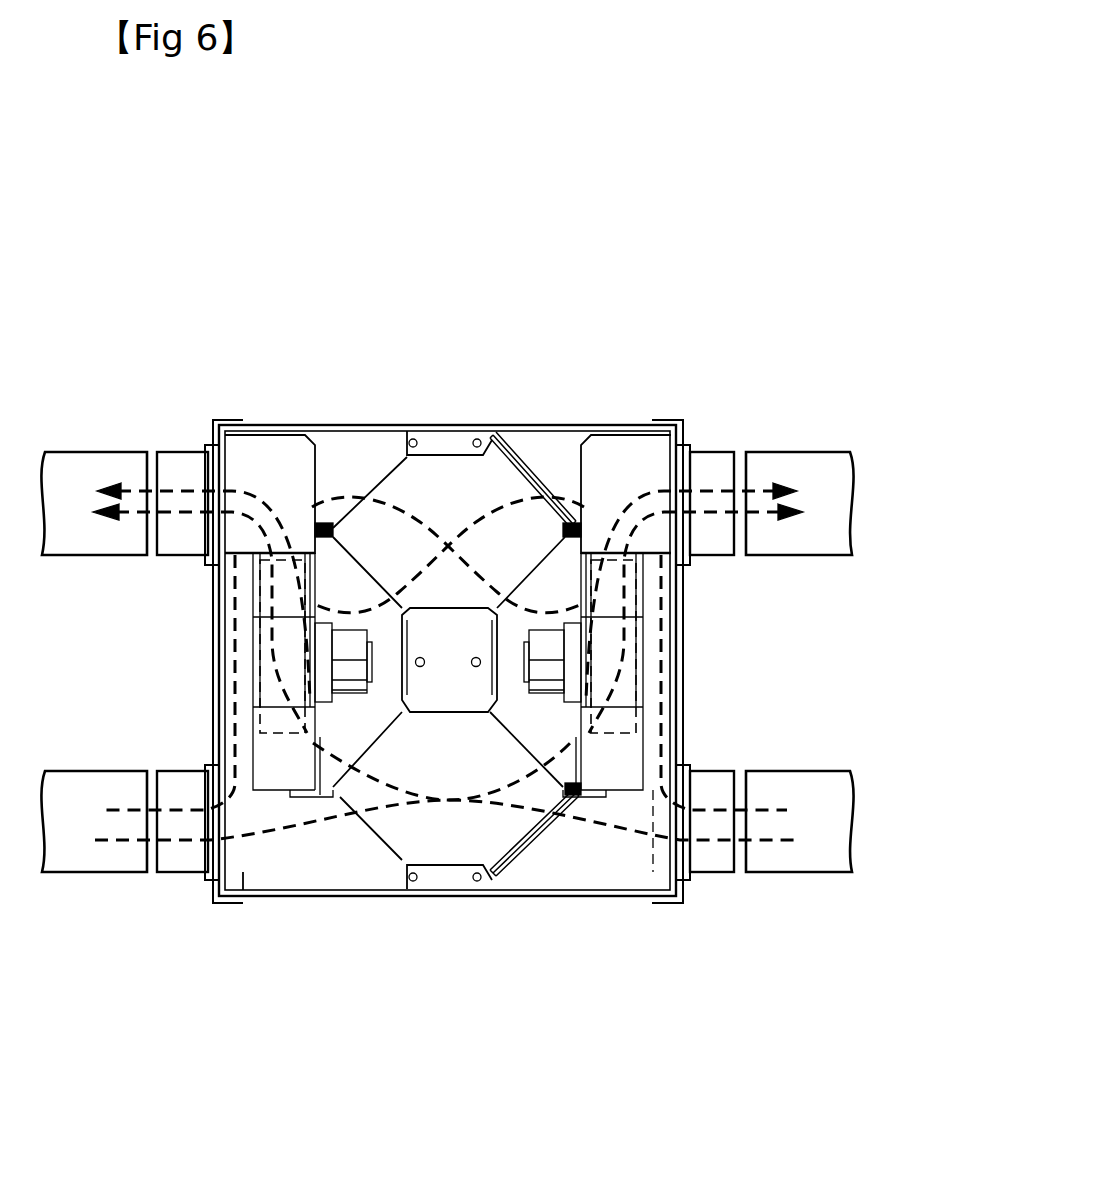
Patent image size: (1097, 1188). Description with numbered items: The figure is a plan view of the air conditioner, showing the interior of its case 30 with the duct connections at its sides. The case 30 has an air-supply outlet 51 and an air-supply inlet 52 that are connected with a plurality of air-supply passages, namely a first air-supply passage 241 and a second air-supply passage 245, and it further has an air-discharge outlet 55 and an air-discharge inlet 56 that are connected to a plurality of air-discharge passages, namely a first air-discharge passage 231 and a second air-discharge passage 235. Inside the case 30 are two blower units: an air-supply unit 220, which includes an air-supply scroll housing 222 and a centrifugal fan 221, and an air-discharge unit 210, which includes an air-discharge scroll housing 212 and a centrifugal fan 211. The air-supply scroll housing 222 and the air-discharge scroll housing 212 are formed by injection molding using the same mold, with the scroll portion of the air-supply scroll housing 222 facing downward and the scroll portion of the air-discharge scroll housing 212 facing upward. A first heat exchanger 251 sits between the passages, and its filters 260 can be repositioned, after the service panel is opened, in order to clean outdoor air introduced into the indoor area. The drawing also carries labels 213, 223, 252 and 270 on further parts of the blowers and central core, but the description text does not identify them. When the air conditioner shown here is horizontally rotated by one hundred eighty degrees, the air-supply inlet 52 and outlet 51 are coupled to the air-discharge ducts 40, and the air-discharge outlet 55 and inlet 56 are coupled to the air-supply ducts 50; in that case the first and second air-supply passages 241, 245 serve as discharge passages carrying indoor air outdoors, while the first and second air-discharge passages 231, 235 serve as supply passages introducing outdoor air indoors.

The case 30 is at (297, 903).
The air-discharge ducts 40 is at (102, 468).
The air-supply ducts 50 is at (822, 470).
The air-supply outlet 51 is at (712, 470).
The air-supply inlet 52 is at (185, 875).
The air-discharge outlet 55 is at (180, 470).
The air-discharge inlet 56 is at (708, 875).
The air-discharge unit 210 is at (219, 570).
The centrifugal fan 211 is at (225, 697).
The air-discharge scroll housing 212 is at (243, 557).
The first motor 213 is at (352, 647).
The air-supply unit 220 is at (673, 576).
The centrifugal fan 221 is at (671, 690).
The air-supply scroll housing 222 is at (653, 545).
The second motor 223 is at (548, 647).
The first air-discharge passage 231 is at (653, 790).
The second air-discharge passage 235 is at (595, 835).
The first air-supply passage 241 is at (243, 880).
The second air-supply passage 245 is at (345, 825).
The first heat exchanger 251 is at (452, 472).
The lower support plate 252 is at (450, 882).
The filters 260 is at (527, 480).
The heat exchanger 270 is at (437, 630).